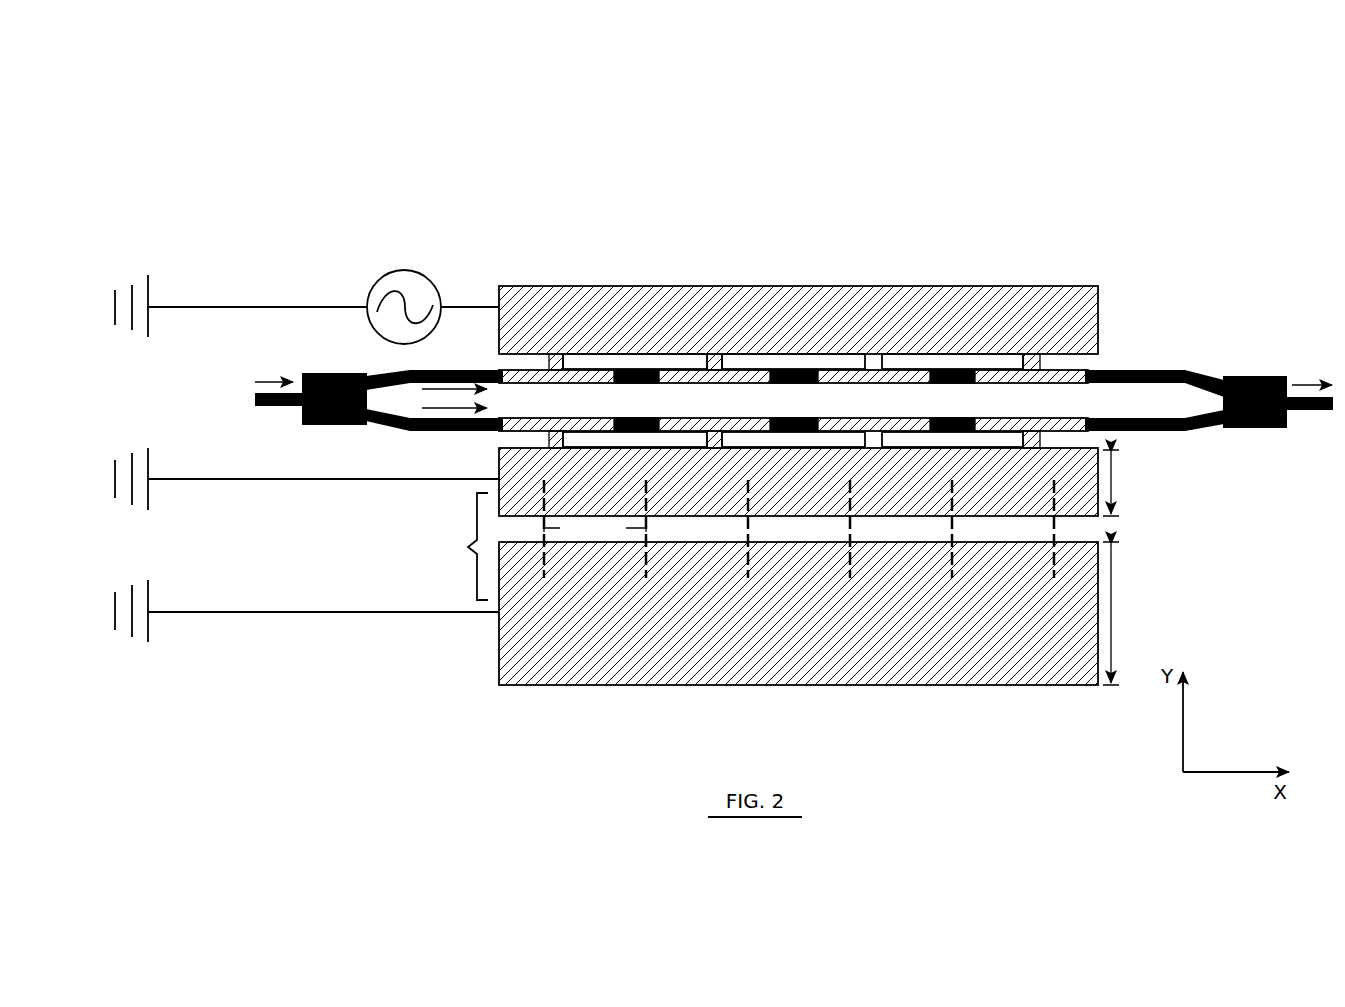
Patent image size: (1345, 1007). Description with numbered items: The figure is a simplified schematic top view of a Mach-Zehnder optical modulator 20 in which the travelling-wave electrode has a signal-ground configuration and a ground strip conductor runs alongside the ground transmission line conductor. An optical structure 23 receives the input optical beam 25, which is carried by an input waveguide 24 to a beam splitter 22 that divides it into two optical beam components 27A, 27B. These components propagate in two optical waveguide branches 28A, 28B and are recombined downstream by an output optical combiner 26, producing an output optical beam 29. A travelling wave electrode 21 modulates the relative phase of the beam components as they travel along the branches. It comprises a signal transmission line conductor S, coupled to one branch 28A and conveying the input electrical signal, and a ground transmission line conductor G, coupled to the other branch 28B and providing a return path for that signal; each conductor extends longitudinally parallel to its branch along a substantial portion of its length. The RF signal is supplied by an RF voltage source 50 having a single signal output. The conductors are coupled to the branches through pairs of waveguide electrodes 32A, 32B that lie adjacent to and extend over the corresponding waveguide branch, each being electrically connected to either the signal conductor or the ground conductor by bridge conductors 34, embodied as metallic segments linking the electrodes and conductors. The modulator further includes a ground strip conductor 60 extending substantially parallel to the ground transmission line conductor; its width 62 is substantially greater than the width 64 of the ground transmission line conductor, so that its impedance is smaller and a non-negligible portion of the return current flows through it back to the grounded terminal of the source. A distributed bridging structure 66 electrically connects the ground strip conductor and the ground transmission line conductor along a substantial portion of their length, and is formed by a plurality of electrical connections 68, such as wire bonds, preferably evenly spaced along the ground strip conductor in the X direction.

The Mach-Zehnder optical modulator 20 is at (448, 82).
The travelling wave electrode 21 is at (747, 262).
The beam splitter 22 is at (335, 427).
The optical structure 23 is at (1148, 302).
The input waveguide 24 is at (255, 396).
The input optical beam 25 is at (270, 380).
The output optical combiner 26 is at (1255, 428).
The optical beam component 27A is at (462, 370).
The optical beam component 27B is at (458, 432).
The optical waveguide branch 28A is at (1162, 370).
The optical waveguide branch 28B is at (1140, 433).
The output optical beam 29 is at (1305, 383).
The waveguide electrode 32A is at (687, 383).
The waveguide electrode 32B is at (840, 418).
The bridge conductor 34 is at (887, 438).
The RF voltage source 50 is at (403, 270).
The ground strip conductor 60 is at (972, 693).
The width of ground strip conductor 62 is at (1115, 612).
The width of ground transmission line conductor 64 is at (1115, 480).
The distributed bridging structure 66 is at (463, 546).
The electrical connections 68 is at (640, 528).
The signal transmission line conductor S is at (975, 286).
The ground transmission line conductor G is at (1098, 517).